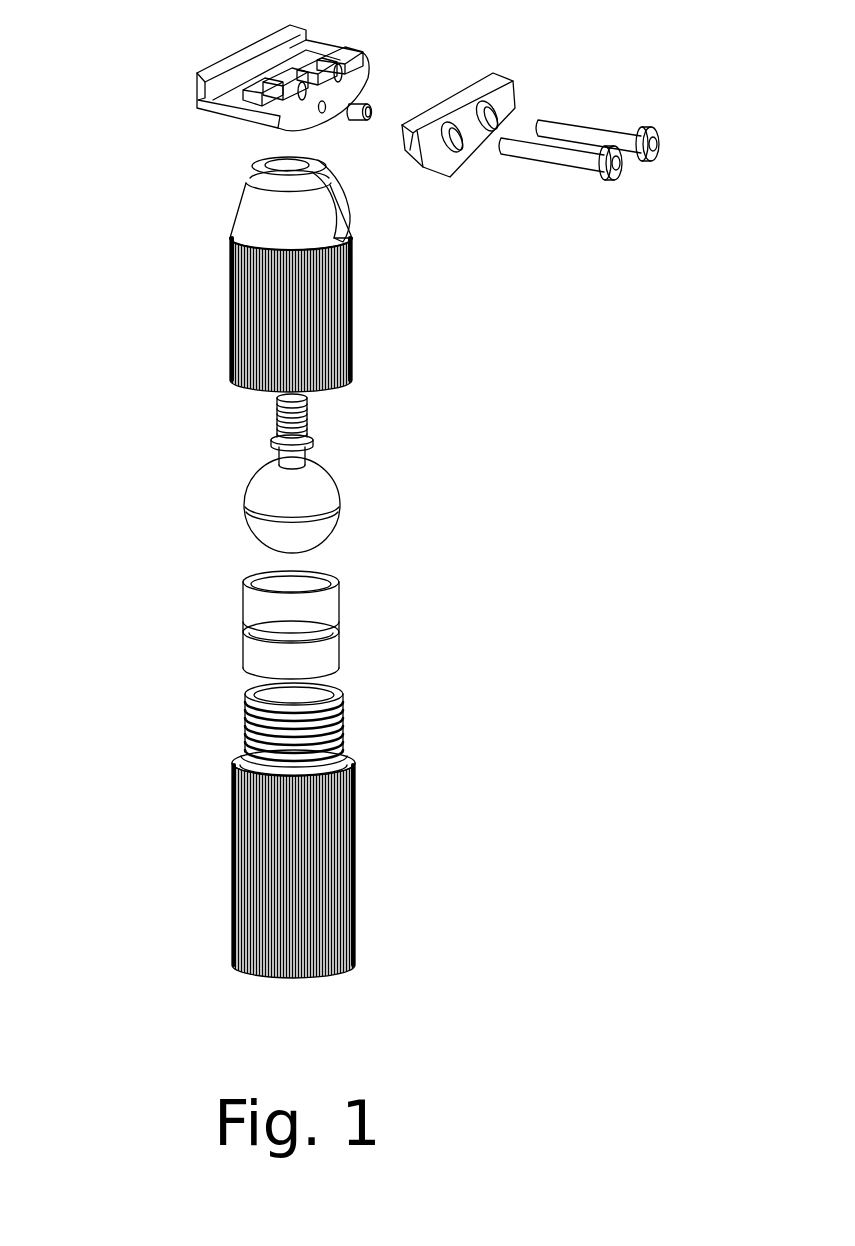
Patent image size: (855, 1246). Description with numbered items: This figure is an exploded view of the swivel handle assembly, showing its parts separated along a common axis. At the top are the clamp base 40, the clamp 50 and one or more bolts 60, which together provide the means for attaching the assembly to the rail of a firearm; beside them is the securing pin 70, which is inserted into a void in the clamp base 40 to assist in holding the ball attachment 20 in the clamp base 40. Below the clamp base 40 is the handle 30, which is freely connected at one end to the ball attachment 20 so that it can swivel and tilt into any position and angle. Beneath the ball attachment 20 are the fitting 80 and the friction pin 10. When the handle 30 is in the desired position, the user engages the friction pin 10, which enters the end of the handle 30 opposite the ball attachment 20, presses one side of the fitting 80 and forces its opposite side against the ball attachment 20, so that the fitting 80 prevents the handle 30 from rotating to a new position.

The friction pin 10 is at (358, 847).
The ball attachment 20 is at (342, 490).
The handle 30 is at (228, 298).
The clamp base 40 is at (195, 94).
The clamp 50 is at (518, 87).
The bolts 60 is at (616, 182).
The securing pin 70 is at (378, 100).
The fitting 80 is at (342, 604).